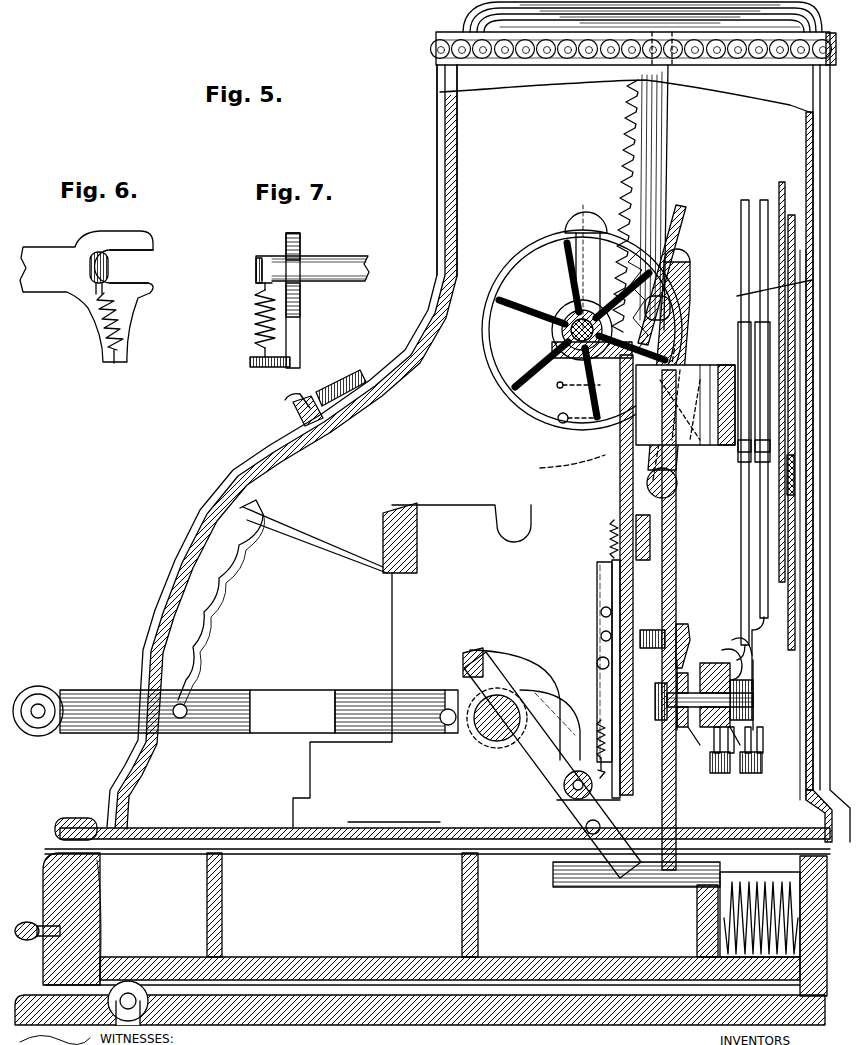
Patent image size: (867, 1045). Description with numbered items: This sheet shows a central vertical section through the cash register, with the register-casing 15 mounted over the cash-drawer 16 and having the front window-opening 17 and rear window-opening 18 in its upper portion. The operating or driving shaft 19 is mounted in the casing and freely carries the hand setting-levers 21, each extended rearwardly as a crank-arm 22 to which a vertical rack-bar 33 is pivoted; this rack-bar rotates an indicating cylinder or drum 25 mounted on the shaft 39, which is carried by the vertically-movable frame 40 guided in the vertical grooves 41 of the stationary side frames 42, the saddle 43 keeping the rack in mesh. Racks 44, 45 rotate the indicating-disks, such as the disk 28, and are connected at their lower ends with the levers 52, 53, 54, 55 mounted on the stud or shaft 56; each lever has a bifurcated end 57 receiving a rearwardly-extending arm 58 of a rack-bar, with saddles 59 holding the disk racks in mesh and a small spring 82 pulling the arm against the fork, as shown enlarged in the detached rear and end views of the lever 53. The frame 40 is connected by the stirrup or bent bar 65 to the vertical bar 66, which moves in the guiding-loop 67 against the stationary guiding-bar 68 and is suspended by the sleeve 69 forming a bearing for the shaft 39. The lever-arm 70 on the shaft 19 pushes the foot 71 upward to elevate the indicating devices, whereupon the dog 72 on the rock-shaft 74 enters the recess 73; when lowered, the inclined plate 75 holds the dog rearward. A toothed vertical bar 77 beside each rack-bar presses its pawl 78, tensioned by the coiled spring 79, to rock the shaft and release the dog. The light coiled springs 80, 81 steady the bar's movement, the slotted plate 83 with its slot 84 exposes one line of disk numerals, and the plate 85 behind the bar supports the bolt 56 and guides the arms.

In FIG. 5, the register-casing 15 is at (233, 472).
In FIG. 5, the cash-drawer 16 is at (422, 921).
In FIG. 5, the front window-opening 17 is at (437, 199).
In FIG. 5, the rear window-opening 18 is at (762, 293).
In FIG. 5, the operating or driving shaft 19 is at (483, 740).
In FIG. 5, the hand setting-lever 21 is at (235, 711).
In FIG. 5, the crank-arm 22 is at (550, 680).
In FIG. 5, the indicating cylinder or drum 25 is at (500, 258).
In FIG. 5, the indicating-disk 28 is at (784, 190).
In FIG. 5, the rack-bar 33 is at (637, 110).
In FIG. 5, the shaft 39 is at (560, 332).
In FIG. 5, the vertically-movable frame 40 is at (725, 366).
In FIG. 5, the vertical groove 41 is at (583, 216).
In FIG. 5, the stationary main supporting side frame 42 is at (463, 510).
In FIG. 5, the saddle 43 is at (668, 303).
In FIG. 5, the rack 44 is at (745, 204).
In FIG. 5, the rack 45 is at (765, 200).
In FIG. 5, the lever 52 is at (712, 660).
In FIG. 5, the lever 53 is at (700, 745).
In FIG. 6, the lever 53 is at (86, 296).
In FIG. 7, the lever 53 is at (290, 323).
In FIG. 5, the lever 54 is at (683, 625).
In FIG. 5, the lever 55 is at (730, 645).
In FIG. 5, the stud or shaft 56 is at (754, 700).
In FIG. 6, the bifurcated end 57 is at (141, 266).
In FIG. 5, the rearwardly-extending arm 58 is at (652, 650).
In FIG. 6, the rearwardly-extending arm 58 is at (110, 268).
In FIG. 7, the rearwardly-extending arm 58 is at (344, 258).
In FIG. 5, the saddle 59 is at (740, 448).
In FIG. 5, the stirrup or bent bar 65 is at (600, 395).
In FIG. 5, the vertical bar 66 is at (612, 480).
In FIG. 5, the guiding-loop 67 is at (608, 563).
In FIG. 5, the stationary guiding-bar 68 is at (634, 775).
In FIG. 5, the sleeve 69 is at (585, 310).
In FIG. 5, the lever-arm 70 is at (535, 770).
In FIG. 5, the foot 71 is at (567, 765).
In FIG. 5, the dog 72 is at (688, 262).
In FIG. 5, the recess 73 is at (556, 385).
In FIG. 5, the rock-shaft 74 is at (676, 490).
In FIG. 5, the inclined plate 75 is at (684, 210).
In FIG. 5, the toothed vertical bar 77 is at (628, 270).
In FIG. 5, the pawl 78 is at (660, 440).
In FIG. 5, the coiled spring 79 is at (565, 423).
In FIG. 5, the coiled spring 80 is at (597, 705).
In FIG. 5, the coiled spring 81 is at (545, 468).
In FIG. 6, the spring 82 is at (122, 333).
In FIG. 7, the spring 82 is at (255, 318).
In FIG. 5, the plate 83 is at (792, 218).
In FIG. 5, the slot 84 is at (794, 478).
In FIG. 5, the plate 85 is at (676, 806).